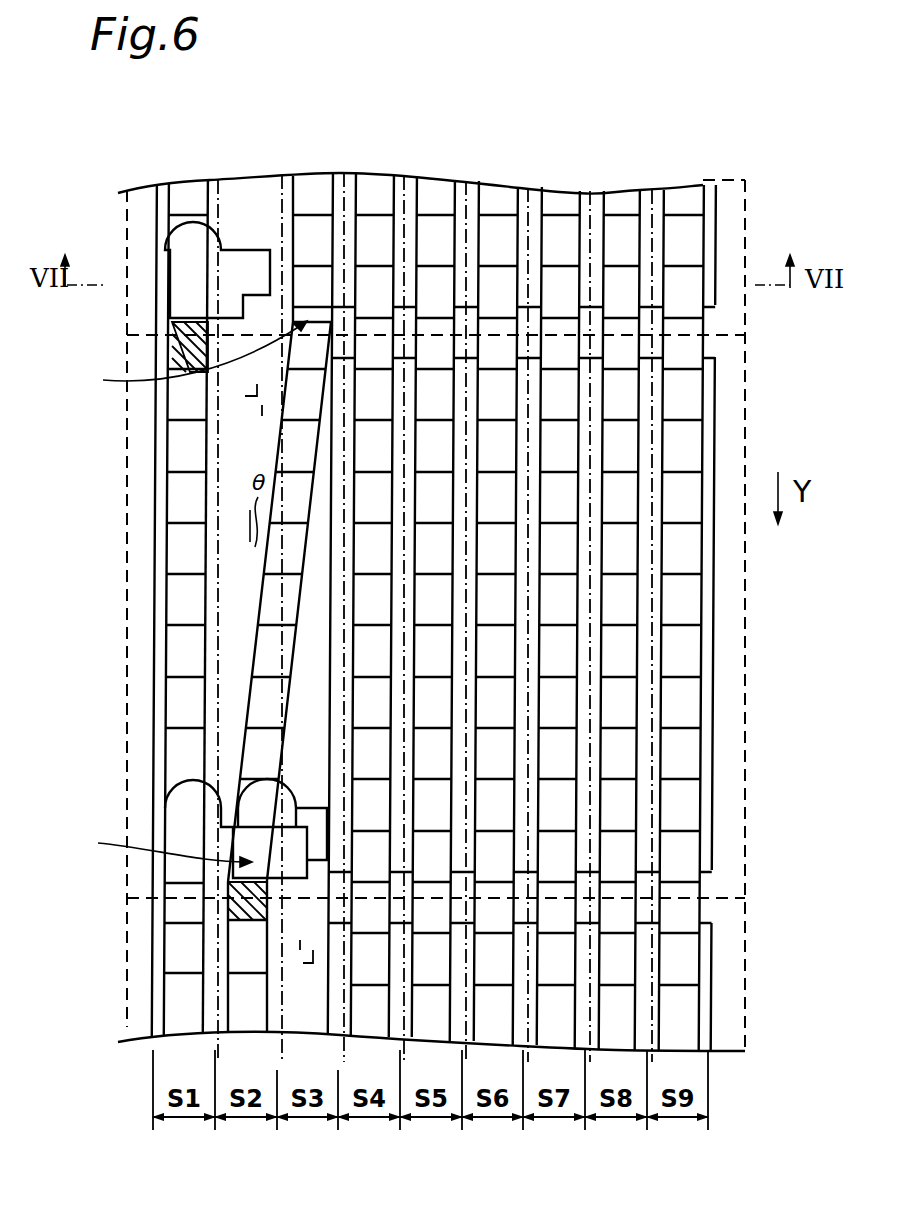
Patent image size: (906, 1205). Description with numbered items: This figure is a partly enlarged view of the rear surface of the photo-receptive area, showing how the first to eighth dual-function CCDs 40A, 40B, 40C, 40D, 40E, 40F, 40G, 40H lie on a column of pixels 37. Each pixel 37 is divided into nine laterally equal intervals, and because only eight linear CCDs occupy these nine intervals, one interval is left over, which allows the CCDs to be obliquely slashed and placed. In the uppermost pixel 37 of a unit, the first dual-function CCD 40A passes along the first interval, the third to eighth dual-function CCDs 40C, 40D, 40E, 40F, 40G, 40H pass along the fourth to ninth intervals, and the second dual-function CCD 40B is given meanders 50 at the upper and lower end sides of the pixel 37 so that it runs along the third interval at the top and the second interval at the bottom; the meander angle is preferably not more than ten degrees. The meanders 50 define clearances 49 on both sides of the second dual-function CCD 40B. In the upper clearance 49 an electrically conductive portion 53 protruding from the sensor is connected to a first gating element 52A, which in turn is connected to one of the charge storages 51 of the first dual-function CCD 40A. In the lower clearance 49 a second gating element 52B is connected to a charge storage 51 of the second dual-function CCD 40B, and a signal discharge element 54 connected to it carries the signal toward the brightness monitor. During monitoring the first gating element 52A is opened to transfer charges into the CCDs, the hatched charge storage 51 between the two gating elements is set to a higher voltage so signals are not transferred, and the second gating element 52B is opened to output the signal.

The pixel 37 is at (750, 222).
The first dual-function CCD 40A is at (187, 182).
The second dual-function CCD 40B is at (307, 182).
The third dual-function CCD 40C is at (371, 182).
The fourth dual-function CCD 40D is at (435, 182).
The fifth dual-function CCD 40E is at (497, 182).
The sixth dual-function CCD 40F is at (560, 182).
The seventh dual-function CCD 40G is at (625, 182).
The eighth dual-function CCD 40H is at (689, 182).
The clearance 49 is at (245, 182).
The meander 50 is at (185, 594).
The charge storage 51 is at (185, 592).
The first gating element 52A is at (257, 393).
The second gating element 52B is at (213, 322).
The electrically conductive portion 53 is at (262, 412).
The signal discharge element 54 is at (157, 250).